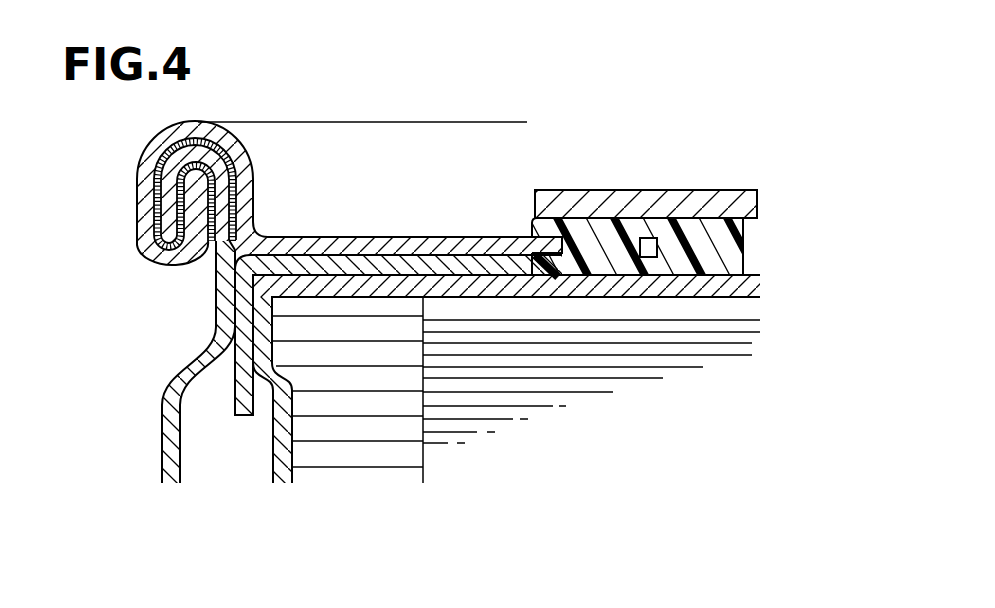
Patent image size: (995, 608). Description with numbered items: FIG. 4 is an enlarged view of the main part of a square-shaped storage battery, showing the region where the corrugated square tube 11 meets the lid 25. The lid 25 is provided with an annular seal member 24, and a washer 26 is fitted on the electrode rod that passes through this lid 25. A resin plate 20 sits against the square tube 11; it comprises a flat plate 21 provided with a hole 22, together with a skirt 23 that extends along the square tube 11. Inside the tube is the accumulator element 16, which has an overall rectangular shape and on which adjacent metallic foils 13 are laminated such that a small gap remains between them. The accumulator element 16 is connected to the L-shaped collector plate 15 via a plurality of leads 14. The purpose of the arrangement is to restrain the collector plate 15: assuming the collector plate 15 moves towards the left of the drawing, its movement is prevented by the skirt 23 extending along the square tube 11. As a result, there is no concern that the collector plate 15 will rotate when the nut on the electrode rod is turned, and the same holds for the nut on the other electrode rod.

The corrugated square tube 11 is at (168, 395).
The metallic foils 13 is at (737, 343).
The leads 14 is at (382, 415).
The collector plate 15 is at (642, 297).
The accumulator element 16 is at (505, 502).
The resin plate 20 is at (334, 226).
The flat plate 21 is at (473, 258).
The hole 22 is at (566, 289).
The skirt 23 is at (245, 325).
The annular seal member 24 is at (733, 256).
The lid 25 is at (400, 237).
The washer 26 is at (688, 191).